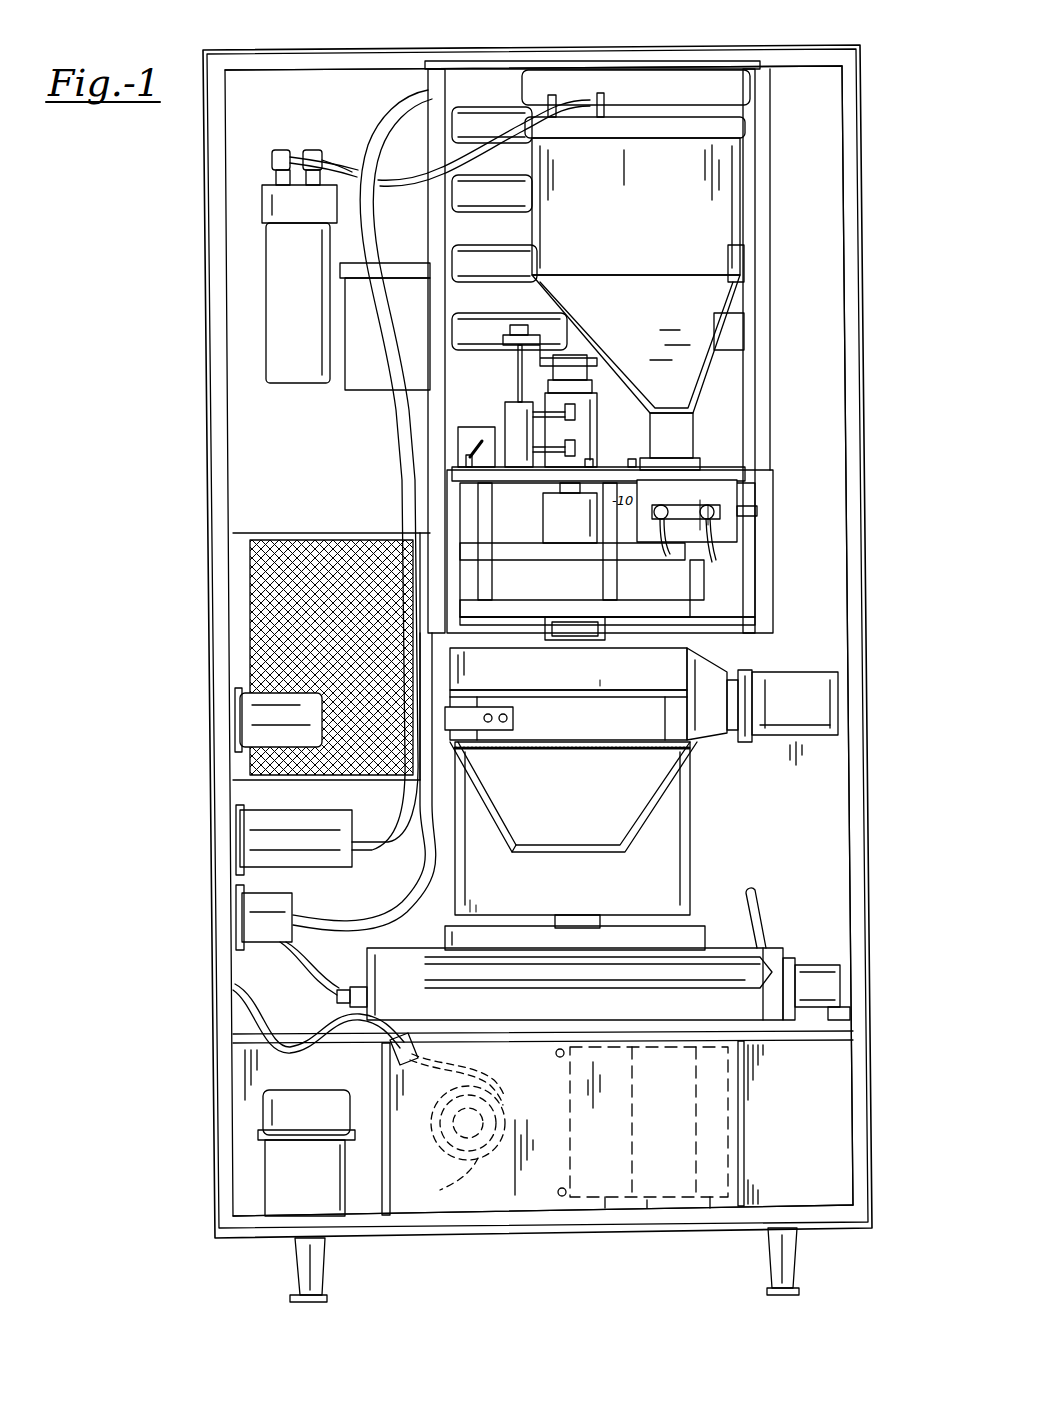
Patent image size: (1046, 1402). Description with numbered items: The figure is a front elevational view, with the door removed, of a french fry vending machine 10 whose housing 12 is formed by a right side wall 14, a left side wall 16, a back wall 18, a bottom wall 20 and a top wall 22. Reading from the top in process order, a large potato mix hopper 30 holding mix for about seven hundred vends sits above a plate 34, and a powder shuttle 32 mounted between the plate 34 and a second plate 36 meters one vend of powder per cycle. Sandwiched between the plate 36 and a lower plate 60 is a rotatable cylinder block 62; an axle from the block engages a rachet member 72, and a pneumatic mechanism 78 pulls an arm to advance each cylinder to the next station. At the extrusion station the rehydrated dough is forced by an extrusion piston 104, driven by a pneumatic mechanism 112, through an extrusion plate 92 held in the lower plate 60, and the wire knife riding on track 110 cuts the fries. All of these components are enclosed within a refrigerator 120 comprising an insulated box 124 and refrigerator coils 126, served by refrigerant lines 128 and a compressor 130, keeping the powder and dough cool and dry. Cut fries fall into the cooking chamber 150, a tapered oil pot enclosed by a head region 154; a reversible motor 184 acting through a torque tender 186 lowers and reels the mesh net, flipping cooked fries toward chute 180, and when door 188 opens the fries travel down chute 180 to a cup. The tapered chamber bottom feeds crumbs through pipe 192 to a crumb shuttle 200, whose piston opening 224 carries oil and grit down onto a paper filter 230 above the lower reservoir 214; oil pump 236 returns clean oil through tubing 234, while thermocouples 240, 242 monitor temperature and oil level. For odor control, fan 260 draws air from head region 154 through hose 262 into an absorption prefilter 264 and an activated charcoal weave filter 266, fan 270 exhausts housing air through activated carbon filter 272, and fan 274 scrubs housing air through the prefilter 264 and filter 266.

The french fry vending machine 10 is at (195, 870).
The housing 12 is at (215, 1137).
The right side wall 14 is at (862, 632).
The left side wall 16 is at (235, 806).
The back wall 18 is at (292, 441).
The bottom wall 20 is at (370, 1243).
The top wall 22 is at (345, 58).
The potato mix hopper 30 is at (720, 228).
The powder shuttle 32 is at (752, 480).
The plate 34 is at (629, 447).
The plate 36 is at (712, 544).
The lower plate 60 is at (735, 616).
The rotatable cylinder block 62 is at (680, 568).
The rachet member 72 is at (477, 470).
The pneumatic mechanism 78 is at (458, 432).
The extrusion plate 92 is at (549, 626).
The extrusion piston 104 is at (543, 527).
The track 110 is at (535, 624).
The pneumatic mechanism 112 is at (597, 400).
The refrigerator 120 is at (777, 350).
The insulated box 124 is at (757, 166).
The refrigerator coils 126 is at (474, 108).
The lines 128 is at (465, 470).
The compressor 130 is at (294, 829).
The cooking chamber 150 is at (695, 836).
The head region 154 is at (588, 672).
The chute 180 is at (545, 830).
The reversible motor 184 is at (797, 670).
The torque tender 186 is at (762, 650).
The door 188 is at (545, 747).
The pipe 192 is at (550, 926).
The crumb shuttle 200 is at (708, 922).
The lower reservoir 214 is at (409, 939).
The piston opening 224 is at (300, 1131).
The paper filter 230 is at (575, 985).
The tubing 234 is at (330, 998).
The oil pump 236 is at (260, 908).
The thermocouple 240 is at (420, 862).
The thermocouple 242 is at (420, 793).
The fan 260 is at (802, 962).
The hose 262 is at (762, 912).
The absorption prefilter 264 is at (710, 1218).
The activated charcoal weave filter 266 is at (605, 1218).
The fan 270 is at (245, 712).
The activated carbon filter 272 is at (270, 560).
The fan 274 is at (461, 1114).